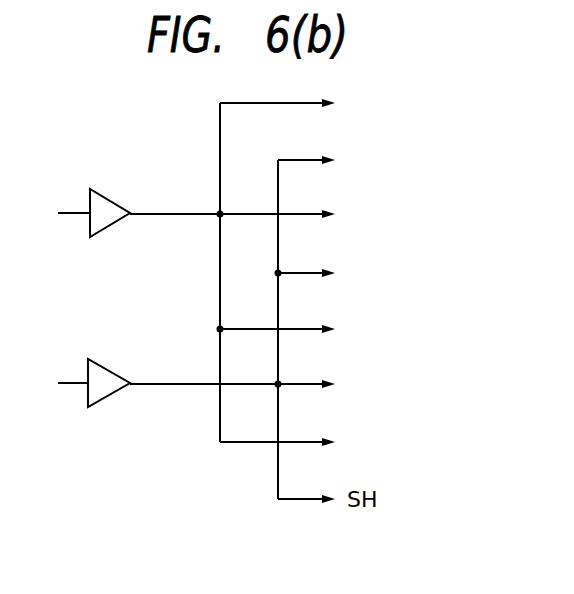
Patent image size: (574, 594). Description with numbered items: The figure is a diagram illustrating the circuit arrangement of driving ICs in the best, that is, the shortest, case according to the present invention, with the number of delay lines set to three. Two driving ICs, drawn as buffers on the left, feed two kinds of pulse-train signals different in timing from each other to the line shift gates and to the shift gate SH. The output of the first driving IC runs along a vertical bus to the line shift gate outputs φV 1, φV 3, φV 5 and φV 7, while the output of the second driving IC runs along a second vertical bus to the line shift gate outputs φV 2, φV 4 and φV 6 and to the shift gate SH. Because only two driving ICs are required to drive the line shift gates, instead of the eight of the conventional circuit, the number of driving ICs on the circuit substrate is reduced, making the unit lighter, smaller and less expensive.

The clock signal ØV1 output 1 is at (304, 105).
The clock signal ØV2 output 2 is at (333, 162).
The clock signal ØV3 output 3 is at (259, 216).
The clock signal ØV4 output 4 is at (333, 275).
The clock signal ØV5 output 5 is at (304, 331).
The clock signal ØV6 output 6 is at (259, 386).
The clock signal ØV7 output 7 is at (304, 444).